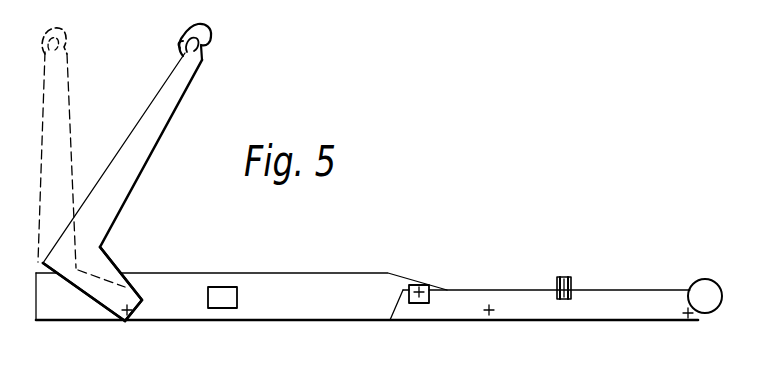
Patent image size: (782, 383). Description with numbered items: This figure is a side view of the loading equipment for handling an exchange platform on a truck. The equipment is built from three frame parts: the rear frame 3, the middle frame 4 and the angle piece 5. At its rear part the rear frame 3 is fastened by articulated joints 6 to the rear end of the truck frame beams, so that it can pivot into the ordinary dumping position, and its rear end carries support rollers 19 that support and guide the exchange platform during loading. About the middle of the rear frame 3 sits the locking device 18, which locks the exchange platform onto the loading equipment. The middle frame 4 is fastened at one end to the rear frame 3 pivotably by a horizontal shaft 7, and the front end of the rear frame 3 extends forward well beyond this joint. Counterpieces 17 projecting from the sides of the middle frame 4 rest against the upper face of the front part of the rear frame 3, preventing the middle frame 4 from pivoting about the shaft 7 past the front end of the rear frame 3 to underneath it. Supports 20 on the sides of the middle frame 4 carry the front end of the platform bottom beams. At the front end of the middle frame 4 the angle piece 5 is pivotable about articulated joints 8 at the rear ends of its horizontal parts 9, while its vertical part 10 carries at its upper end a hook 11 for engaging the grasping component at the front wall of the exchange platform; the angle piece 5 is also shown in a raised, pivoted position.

The rear frame 3 is at (623, 300).
The middle frame 4 is at (263, 288).
The angle piece 5 is at (150, 155).
The articulated joints 6 is at (698, 318).
The horizontal shaft 7 is at (487, 313).
The articulated joints 8 is at (123, 313).
The horizontal parts 9 is at (100, 268).
The vertical part 10 is at (155, 113).
The hook 11 is at (207, 38).
The counterpieces 17 is at (419, 292).
The locking device 18 is at (563, 275).
The support rollers 19 is at (710, 292).
The supports 20 is at (225, 302).